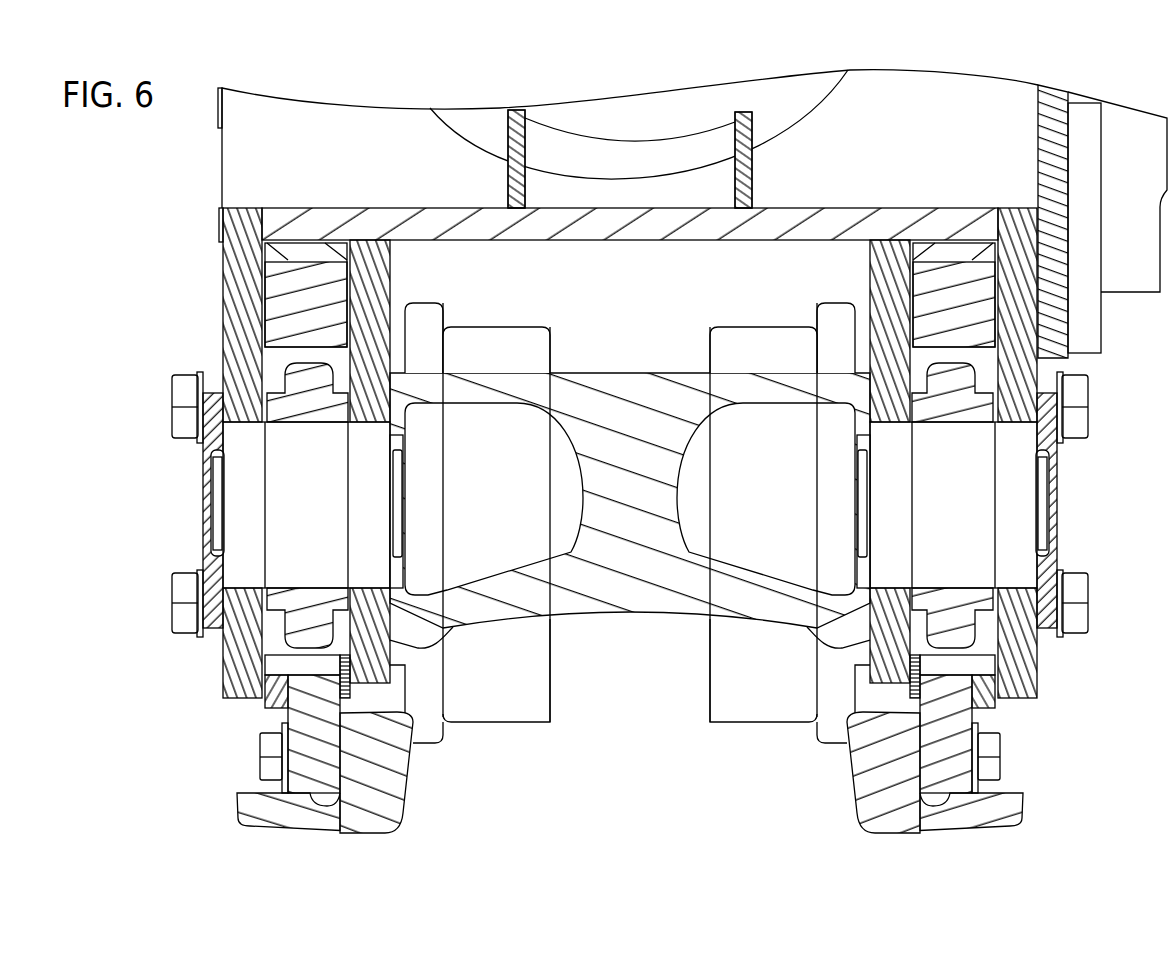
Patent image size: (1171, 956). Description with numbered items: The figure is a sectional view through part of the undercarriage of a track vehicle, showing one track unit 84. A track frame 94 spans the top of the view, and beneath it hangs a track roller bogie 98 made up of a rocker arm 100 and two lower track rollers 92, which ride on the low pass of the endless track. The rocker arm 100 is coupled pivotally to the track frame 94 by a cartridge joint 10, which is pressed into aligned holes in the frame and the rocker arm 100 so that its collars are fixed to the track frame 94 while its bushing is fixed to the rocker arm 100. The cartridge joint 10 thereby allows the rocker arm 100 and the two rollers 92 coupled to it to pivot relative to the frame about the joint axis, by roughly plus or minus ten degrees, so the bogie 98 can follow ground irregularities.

The cartridge joint 10 is at (365, 567).
The track unit 84 is at (150, 228).
The lower track roller 92 is at (508, 680).
The track frame 94 is at (382, 290).
The track roller bogie 98 is at (473, 756).
The rocker arm 100 is at (335, 395).